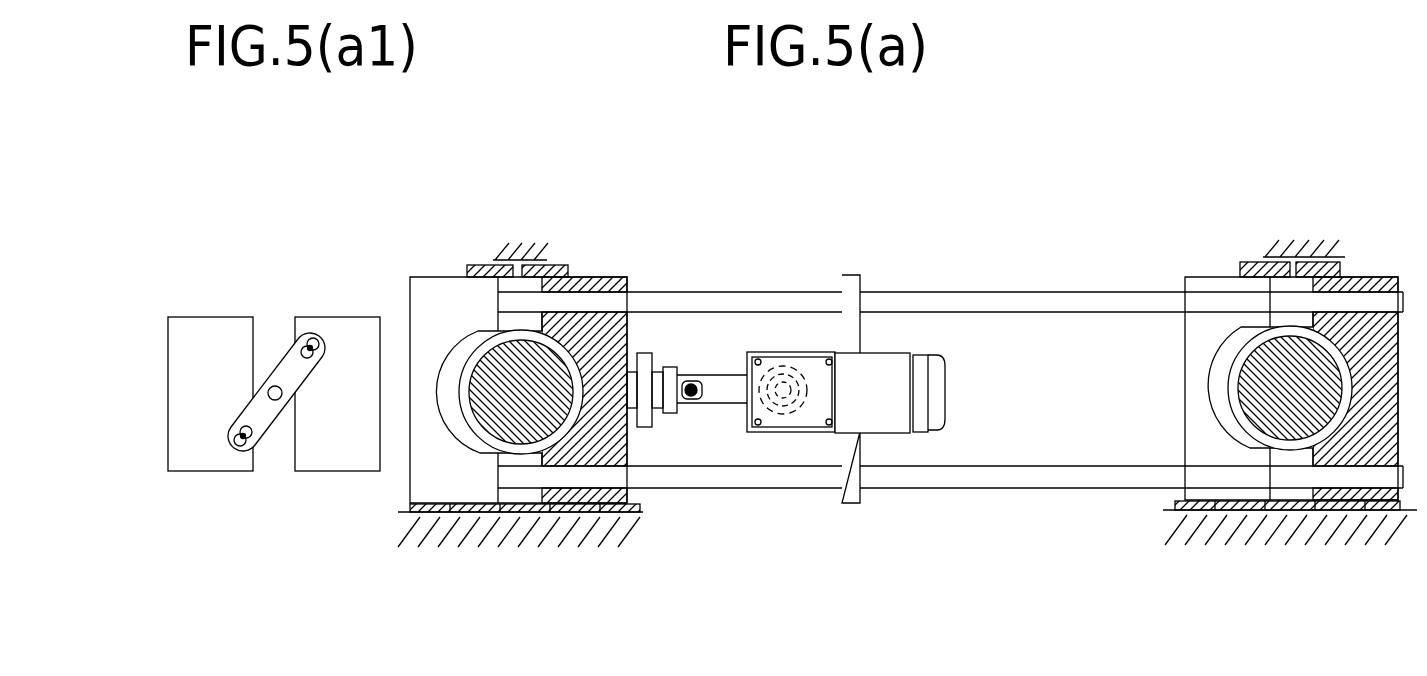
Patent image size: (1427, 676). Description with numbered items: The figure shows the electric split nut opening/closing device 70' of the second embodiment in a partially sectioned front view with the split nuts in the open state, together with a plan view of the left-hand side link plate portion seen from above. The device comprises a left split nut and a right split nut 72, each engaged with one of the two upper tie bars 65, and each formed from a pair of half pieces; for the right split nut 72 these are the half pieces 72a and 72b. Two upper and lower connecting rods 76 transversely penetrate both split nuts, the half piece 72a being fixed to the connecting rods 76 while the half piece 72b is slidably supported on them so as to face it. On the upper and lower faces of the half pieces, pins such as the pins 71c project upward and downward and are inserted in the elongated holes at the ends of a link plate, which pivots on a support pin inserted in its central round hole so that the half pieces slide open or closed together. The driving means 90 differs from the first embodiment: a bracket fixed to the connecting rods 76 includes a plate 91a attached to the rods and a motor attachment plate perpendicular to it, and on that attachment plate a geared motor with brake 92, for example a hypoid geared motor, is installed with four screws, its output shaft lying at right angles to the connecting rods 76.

The opening/closing device 70' is at (851, 381).
The pins 71c is at (245, 432).
The right split nut 72 is at (1218, 462).
The left half piece 72a is at (1183, 430).
The right half piece 72b is at (1295, 466).
The tie bars 65 is at (470, 345).
The connecting rods 76 is at (1118, 313).
The driving means 90 is at (846, 371).
The plate 91a is at (856, 276).
The geared motor with brake 92 is at (886, 435).